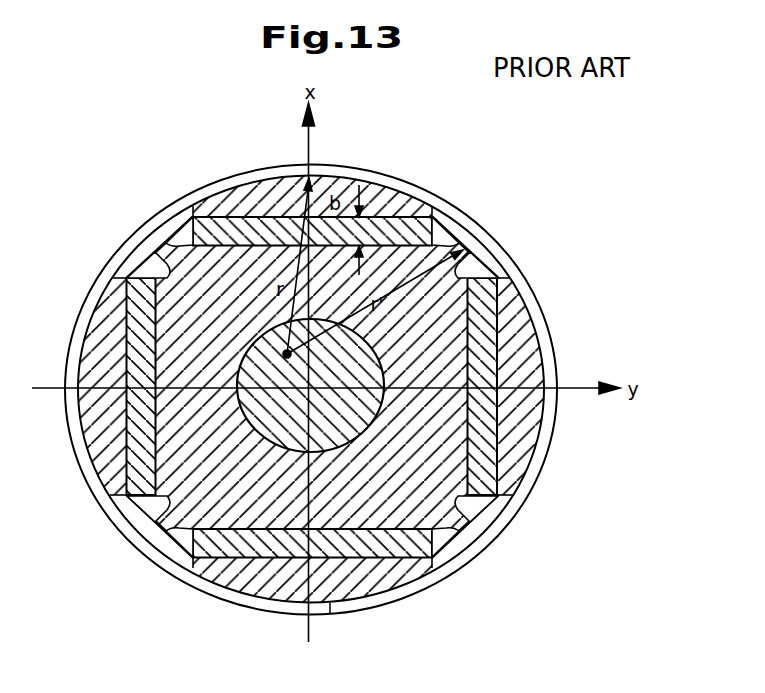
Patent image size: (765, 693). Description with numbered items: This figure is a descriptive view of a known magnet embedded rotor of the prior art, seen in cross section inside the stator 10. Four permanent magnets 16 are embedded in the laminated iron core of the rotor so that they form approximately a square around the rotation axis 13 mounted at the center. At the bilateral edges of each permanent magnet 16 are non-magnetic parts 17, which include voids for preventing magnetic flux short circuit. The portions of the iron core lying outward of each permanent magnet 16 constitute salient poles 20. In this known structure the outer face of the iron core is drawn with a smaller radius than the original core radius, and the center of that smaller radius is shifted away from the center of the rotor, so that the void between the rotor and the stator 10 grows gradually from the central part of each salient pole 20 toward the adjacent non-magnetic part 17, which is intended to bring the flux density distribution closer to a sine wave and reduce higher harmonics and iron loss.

The stator 10 is at (392, 604).
The salient pole 20 is at (330, 604).
The rotation axis 13 is at (355, 406).
The permanent magnet 16 is at (418, 232).
The non-magnetic part 17 is at (173, 238).